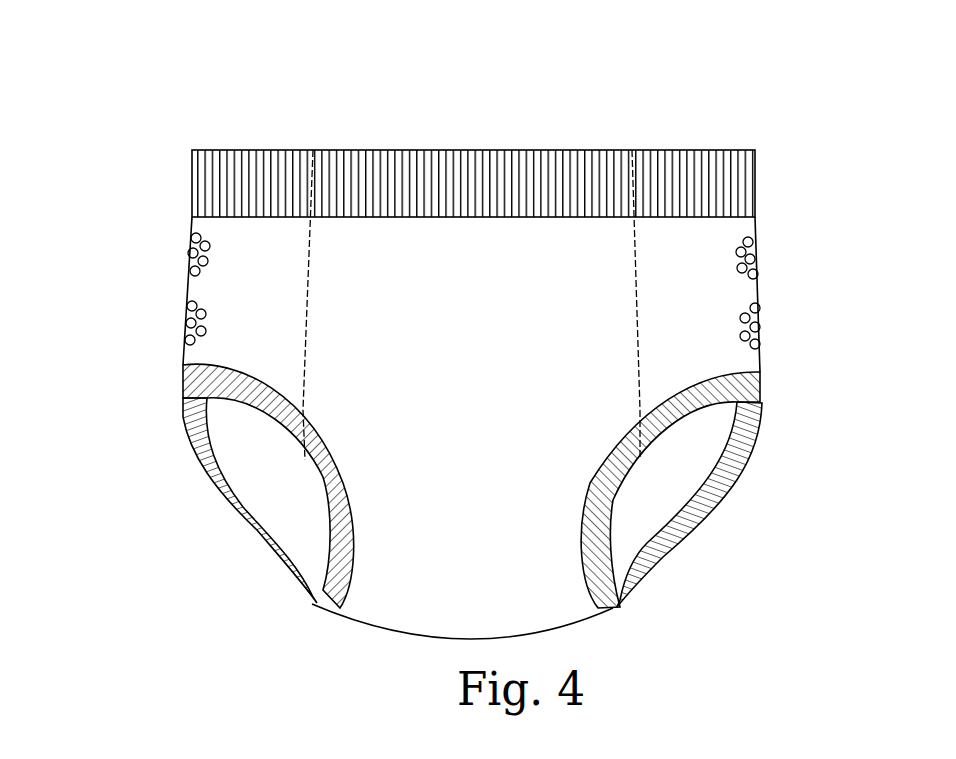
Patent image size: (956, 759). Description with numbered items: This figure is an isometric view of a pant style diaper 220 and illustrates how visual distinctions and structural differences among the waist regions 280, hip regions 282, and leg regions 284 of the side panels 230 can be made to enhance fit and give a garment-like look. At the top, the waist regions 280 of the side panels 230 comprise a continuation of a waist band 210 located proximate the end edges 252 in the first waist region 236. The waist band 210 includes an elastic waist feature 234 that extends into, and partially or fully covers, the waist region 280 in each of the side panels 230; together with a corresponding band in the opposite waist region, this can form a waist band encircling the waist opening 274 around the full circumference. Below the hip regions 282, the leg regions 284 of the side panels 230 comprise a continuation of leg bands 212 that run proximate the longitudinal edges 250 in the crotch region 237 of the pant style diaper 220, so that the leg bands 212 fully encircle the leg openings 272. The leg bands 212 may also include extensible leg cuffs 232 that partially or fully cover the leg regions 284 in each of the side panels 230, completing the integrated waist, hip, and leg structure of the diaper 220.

The pant style diaper 220 is at (137, 112).
The waist opening 274 is at (325, 138).
The waist regions 280 is at (240, 177).
The waist band 210 is at (403, 173).
The end edges 252 is at (472, 153).
The elastic waist feature 234 is at (557, 177).
The first waist region 236 is at (593, 258).
The hip regions 282 is at (218, 263).
The side panels 230 is at (258, 292).
The leg regions 284 is at (227, 380).
The leg openings 272 is at (265, 462).
The longitudinal edges 250 is at (333, 525).
The leg bands 212 is at (315, 550).
The extensible leg cuffs 232 is at (325, 605).
The crotch region 237 is at (475, 568).